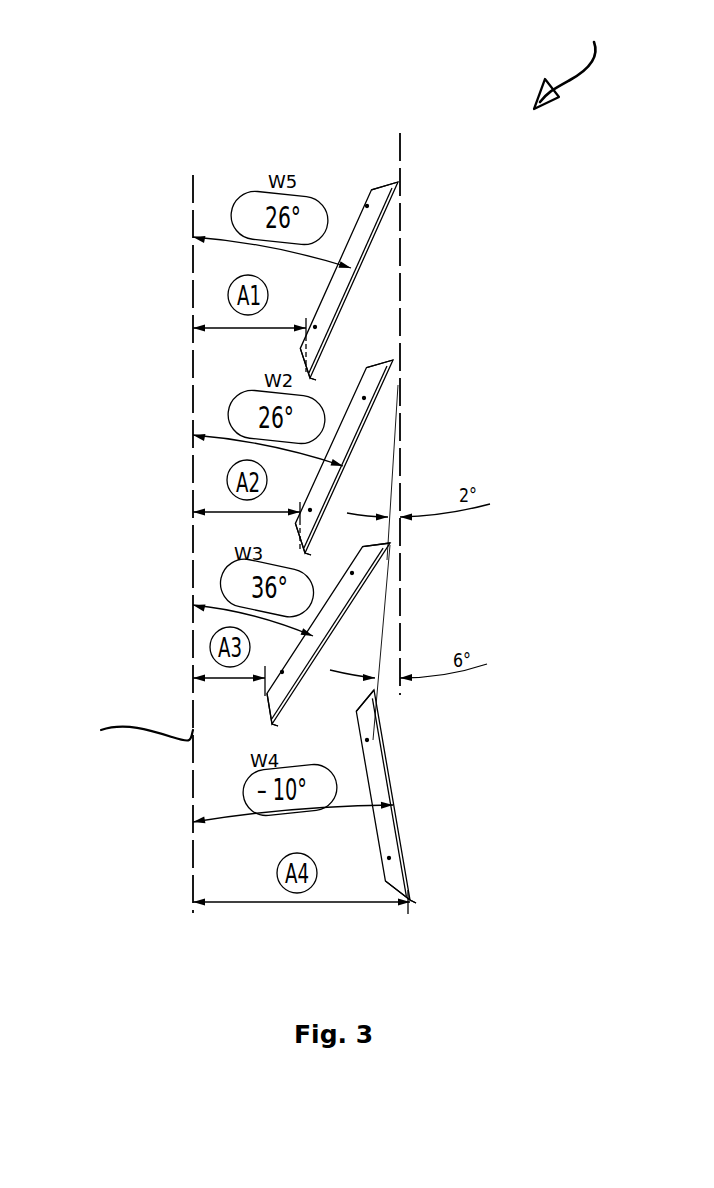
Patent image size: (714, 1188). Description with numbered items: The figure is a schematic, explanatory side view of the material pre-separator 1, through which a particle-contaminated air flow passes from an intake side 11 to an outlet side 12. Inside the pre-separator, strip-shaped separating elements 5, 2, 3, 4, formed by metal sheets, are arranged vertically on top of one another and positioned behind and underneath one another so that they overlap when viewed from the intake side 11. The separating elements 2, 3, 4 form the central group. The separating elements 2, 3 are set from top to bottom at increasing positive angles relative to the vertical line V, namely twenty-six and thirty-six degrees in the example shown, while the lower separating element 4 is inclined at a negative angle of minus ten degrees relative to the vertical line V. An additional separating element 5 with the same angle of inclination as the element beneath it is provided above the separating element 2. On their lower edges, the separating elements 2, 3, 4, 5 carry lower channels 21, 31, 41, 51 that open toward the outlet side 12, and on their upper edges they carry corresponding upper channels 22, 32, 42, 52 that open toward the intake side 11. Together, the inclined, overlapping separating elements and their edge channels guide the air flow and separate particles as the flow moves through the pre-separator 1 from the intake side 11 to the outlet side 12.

The material pre-separator 1 is at (572, 56).
The separating element 2 is at (384, 447).
The separating element 3 is at (380, 636).
The lower separating element 4 is at (426, 817).
The separating element 5 is at (390, 266).
The intake side 11 is at (125, 567).
The outlet side 12 is at (625, 593).
The lower channel 21 is at (315, 553).
The upper channel 22 is at (390, 362).
The lower channel 31 is at (280, 727).
The upper channel 32 is at (386, 545).
The lower channel 41 is at (421, 903).
The upper channel 42 is at (373, 690).
The lower channel 51 is at (320, 376).
The upper channel 52 is at (398, 182).
The vertical line V is at (128, 745).